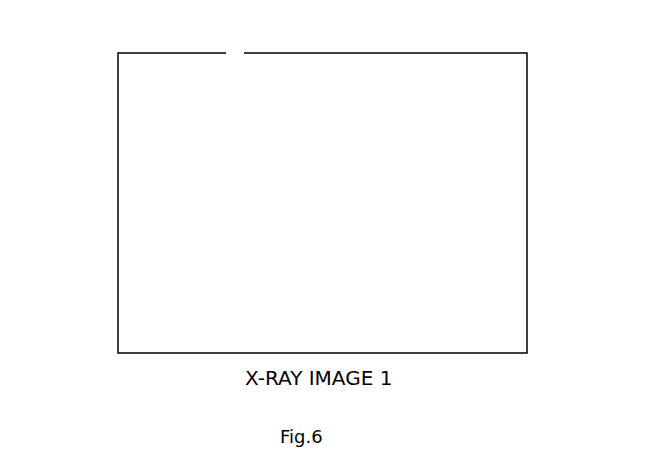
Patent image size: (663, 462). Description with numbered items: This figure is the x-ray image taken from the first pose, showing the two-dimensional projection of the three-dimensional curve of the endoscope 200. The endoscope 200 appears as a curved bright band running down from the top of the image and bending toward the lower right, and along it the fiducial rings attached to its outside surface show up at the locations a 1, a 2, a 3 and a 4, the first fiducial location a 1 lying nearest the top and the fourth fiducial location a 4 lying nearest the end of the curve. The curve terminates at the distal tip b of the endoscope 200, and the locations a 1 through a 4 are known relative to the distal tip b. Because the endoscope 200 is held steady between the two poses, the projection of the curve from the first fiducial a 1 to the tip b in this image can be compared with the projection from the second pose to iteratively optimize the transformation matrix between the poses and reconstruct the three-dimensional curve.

The endoscope 200 is at (240, 83).
The first fiducial location a 1 is at (203, 107).
The second fiducial location a 2 is at (220, 200).
The third fiducial location a 3 is at (245, 247).
The fourth fiducial location a 4 is at (262, 280).
The distal tip b is at (305, 295).